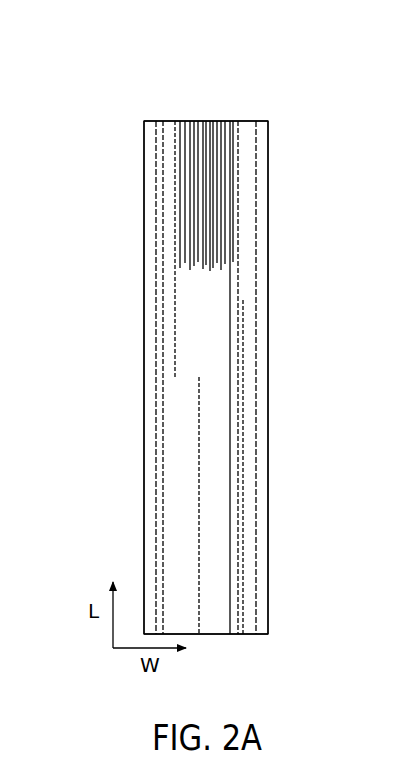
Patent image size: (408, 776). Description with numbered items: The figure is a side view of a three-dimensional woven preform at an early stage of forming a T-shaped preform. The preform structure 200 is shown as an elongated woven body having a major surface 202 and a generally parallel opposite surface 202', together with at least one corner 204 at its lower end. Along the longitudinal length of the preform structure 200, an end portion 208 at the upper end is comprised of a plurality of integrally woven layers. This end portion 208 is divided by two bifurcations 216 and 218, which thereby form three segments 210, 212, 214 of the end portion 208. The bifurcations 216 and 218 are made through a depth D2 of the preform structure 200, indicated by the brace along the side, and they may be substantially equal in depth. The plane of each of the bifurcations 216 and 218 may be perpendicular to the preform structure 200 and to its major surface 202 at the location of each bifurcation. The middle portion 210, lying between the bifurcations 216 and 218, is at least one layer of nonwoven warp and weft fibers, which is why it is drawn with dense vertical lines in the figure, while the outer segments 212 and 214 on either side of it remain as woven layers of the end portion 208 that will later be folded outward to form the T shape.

The preform structure 200 is at (88, 420).
The major surface 202 is at (101, 377).
The opposite surface 202' is at (321, 377).
The corner 204 is at (268, 634).
The end portion 208 is at (247, 120).
The portion 210 is at (228, 100).
The segment 212 is at (254, 120).
The segment 214 is at (157, 120).
The bifurcation 216 is at (180, 120).
The bifurcation 218 is at (232, 120).
The depth D2 is at (120, 267).